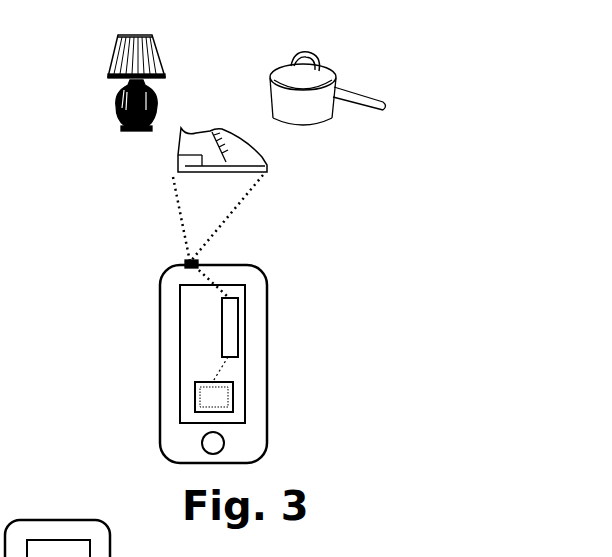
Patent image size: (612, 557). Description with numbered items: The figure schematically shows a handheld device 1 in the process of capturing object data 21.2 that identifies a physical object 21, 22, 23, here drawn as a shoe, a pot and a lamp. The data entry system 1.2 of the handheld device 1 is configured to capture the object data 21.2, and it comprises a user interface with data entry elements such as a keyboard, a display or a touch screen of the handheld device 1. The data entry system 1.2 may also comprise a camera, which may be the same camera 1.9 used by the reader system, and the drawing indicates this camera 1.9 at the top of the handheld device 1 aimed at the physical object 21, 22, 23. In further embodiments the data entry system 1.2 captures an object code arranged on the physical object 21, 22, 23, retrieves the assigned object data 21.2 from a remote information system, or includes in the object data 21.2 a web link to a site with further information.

The handheld device 1 is at (255, 430).
The data entry system 1.2 is at (236, 327).
The camera 1.9 is at (133, 248).
The physical object 21 is at (263, 163).
The object data 21.2 is at (233, 397).
The physical object 22 is at (308, 107).
The physical object 23 is at (152, 53).